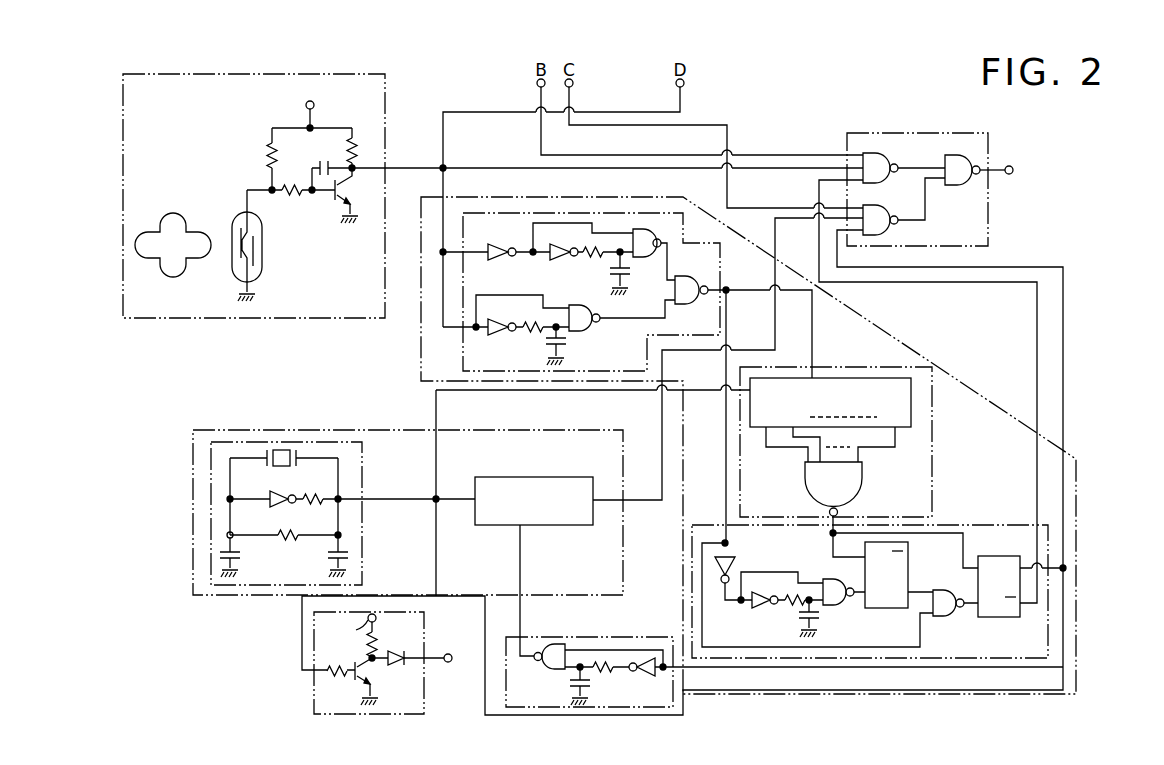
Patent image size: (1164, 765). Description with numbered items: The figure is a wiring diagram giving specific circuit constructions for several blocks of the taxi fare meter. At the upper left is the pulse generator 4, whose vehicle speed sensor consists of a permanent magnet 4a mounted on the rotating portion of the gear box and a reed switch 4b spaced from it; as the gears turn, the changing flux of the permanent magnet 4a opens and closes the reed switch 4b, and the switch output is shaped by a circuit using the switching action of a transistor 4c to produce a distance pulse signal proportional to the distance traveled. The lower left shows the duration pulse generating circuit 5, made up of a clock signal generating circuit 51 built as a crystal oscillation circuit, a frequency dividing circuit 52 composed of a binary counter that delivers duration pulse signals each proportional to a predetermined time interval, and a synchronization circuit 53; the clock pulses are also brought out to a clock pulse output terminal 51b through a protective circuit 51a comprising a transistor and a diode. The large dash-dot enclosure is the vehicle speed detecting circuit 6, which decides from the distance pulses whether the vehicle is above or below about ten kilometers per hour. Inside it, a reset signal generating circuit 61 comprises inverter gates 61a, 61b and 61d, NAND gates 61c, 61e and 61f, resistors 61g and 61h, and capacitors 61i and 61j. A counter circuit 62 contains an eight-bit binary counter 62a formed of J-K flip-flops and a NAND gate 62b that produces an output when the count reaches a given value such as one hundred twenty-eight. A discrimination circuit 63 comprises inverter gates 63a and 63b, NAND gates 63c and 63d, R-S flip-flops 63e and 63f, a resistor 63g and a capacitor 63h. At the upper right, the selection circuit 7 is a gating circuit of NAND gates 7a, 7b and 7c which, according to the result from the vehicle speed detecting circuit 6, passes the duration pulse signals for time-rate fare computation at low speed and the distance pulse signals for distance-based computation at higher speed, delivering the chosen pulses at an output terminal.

The pulse generator 4 is at (276, 319).
The permanent magnet 4a is at (186, 224).
The reed switch 4b is at (264, 254).
The transistor 4c is at (340, 205).
The duration pulse generating circuit 5 is at (190, 456).
The clock signal generating circuit 51 is at (366, 542).
The protective circuit 51a is at (314, 696).
The clock pulse output terminal 51b is at (449, 654).
The frequency dividing circuit 52 is at (532, 477).
The synchronization circuit 53 is at (591, 637).
The vehicle speed detecting circuit 6 is at (1080, 658).
The reset signal generating circuit 61 is at (517, 212).
The inverter gate 61a is at (505, 234).
The inverter gate 61b is at (553, 259).
The NAND gate 61c is at (646, 229).
The inverter gate 61d is at (478, 331).
The NAND gate 61e is at (580, 305).
The NAND gate 61f is at (706, 278).
The resistor 61g is at (588, 246).
The resistor 61h is at (533, 333).
The capacitor 61i is at (640, 271).
The capacitor 61j is at (570, 345).
The counter circuit 62 is at (934, 485).
The eight-bit binary counter 62a is at (932, 408).
The NAND gate 62b is at (864, 472).
The discrimination circuit 63 is at (1052, 582).
The inverter gate 63a is at (734, 566).
The inverter gate 63b is at (746, 604).
The NAND gate 63c is at (826, 578).
The NAND gate 63d is at (940, 616).
The R-S flip-flop 63e is at (909, 561).
The R-S flip-flop 63f is at (998, 617).
The resistor 63g is at (791, 604).
The capacitor 63h is at (819, 613).
The selection circuit 7 is at (847, 141).
The NAND gate 7a is at (884, 212).
The NAND gate 7b is at (897, 162).
The NAND gate 7c is at (958, 154).